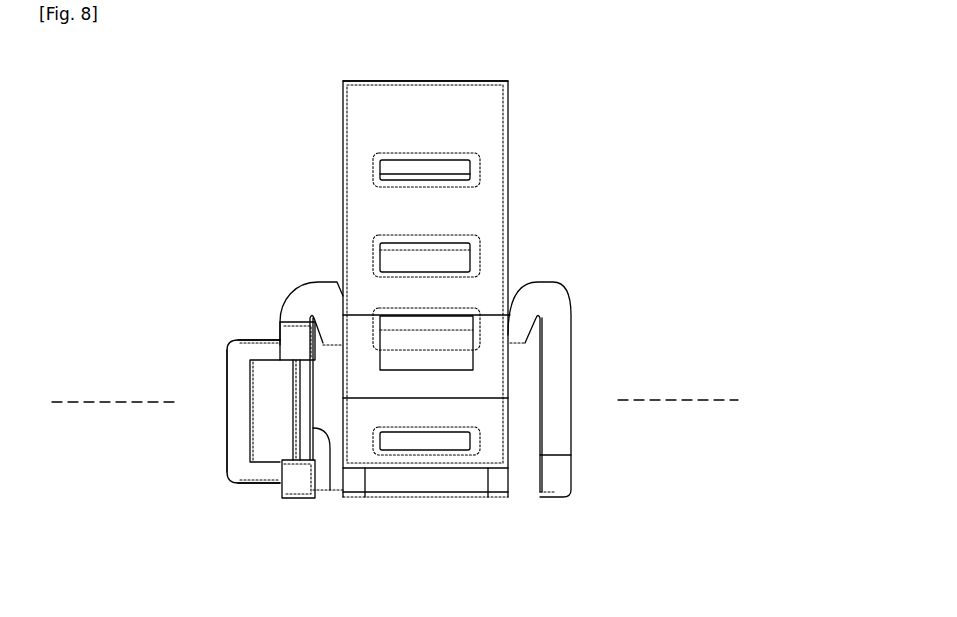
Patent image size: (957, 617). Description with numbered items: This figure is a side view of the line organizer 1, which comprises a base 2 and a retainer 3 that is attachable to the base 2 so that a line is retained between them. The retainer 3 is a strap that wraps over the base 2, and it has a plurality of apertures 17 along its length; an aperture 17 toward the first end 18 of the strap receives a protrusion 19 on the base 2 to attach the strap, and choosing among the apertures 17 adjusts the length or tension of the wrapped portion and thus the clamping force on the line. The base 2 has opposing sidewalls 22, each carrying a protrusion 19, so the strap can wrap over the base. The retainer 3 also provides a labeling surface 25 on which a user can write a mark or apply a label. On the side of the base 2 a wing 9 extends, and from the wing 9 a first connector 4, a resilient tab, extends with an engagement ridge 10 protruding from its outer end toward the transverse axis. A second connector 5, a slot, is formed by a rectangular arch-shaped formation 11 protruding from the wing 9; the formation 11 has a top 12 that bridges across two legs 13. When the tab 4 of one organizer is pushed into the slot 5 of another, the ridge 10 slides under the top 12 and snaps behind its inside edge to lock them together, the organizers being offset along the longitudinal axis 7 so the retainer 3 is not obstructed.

The line organizer 1 is at (726, 142).
The base 2 is at (524, 500).
The retainer 3 is at (509, 126).
The first connector 4 is at (303, 410).
The second connector 5 is at (265, 432).
The longitudinal axis 7 is at (696, 399).
The wing 9 is at (293, 328).
The engagement ridge 10 is at (330, 493).
The rectangular arch-shaped formation 11 is at (232, 462).
The top 12 is at (227, 365).
The legs 13 is at (255, 355).
The aperture 17 is at (445, 172).
The first end 18 is at (462, 485).
The protrusion 19 is at (435, 355).
The sidewall 22 is at (525, 435).
The labeling surface 25 is at (372, 80).